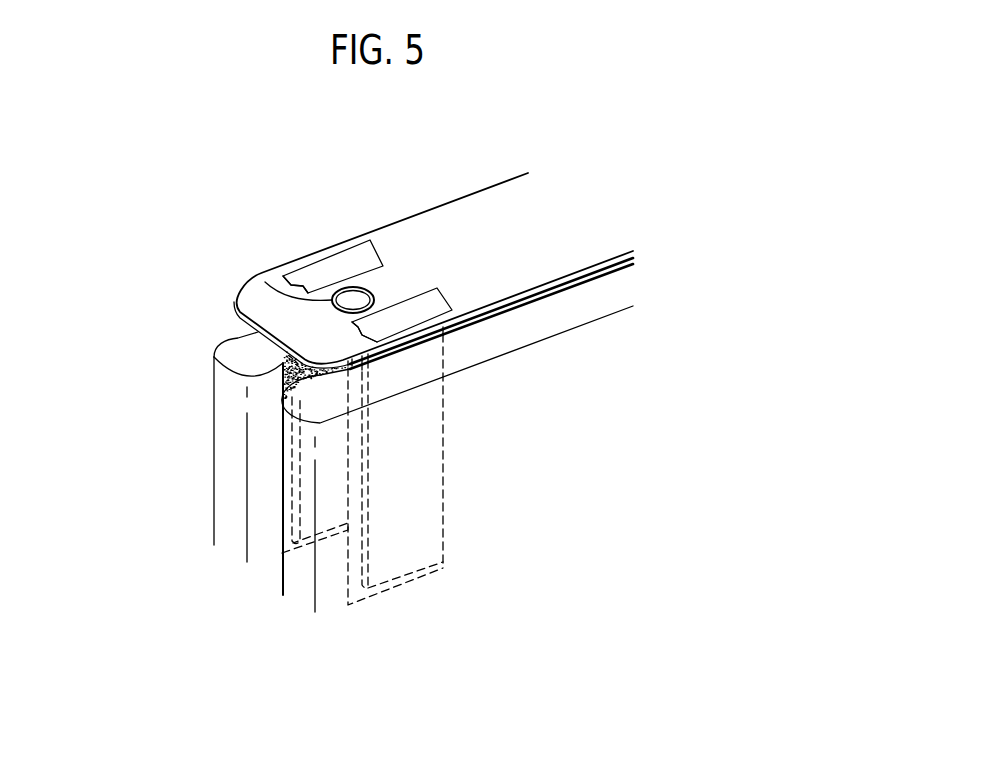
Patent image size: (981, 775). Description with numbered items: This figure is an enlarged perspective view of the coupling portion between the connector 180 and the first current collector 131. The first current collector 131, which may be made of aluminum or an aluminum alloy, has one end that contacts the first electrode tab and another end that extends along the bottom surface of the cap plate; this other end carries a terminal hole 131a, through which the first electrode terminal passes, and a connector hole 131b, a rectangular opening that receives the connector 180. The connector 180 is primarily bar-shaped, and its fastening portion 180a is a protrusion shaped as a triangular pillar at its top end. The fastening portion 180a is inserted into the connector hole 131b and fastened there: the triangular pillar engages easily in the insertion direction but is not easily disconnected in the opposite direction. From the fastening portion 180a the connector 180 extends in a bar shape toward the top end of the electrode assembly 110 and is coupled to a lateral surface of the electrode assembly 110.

The electrode assembly 110 is at (290, 576).
The first current collector 131 is at (502, 195).
The terminal hole 131a is at (265, 282).
The connector hole 131b is at (360, 331).
The connector 180 is at (297, 262).
The fastening portion 180a is at (432, 290).